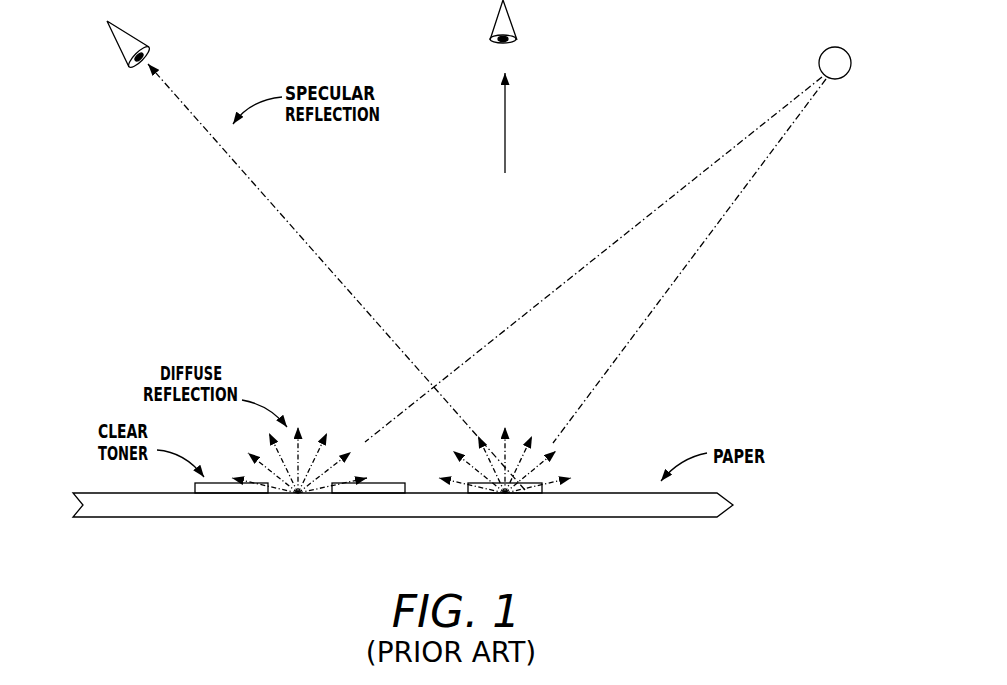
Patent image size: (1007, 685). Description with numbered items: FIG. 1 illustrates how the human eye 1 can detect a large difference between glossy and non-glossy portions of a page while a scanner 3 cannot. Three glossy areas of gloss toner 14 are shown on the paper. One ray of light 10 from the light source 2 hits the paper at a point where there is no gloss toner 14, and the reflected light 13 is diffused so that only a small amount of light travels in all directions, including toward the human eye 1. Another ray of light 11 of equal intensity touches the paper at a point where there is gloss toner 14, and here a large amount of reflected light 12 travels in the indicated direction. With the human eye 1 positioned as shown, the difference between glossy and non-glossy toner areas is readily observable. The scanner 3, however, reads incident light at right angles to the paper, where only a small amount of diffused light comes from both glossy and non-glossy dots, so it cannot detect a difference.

The human eye 1 is at (135, 37).
The light source 2 is at (822, 52).
The scanner 3 is at (513, 20).
The ray of light 10 is at (657, 210).
The ray of light 11 is at (707, 238).
The reflected light 12 is at (278, 207).
The reflected light 13 is at (314, 422).
The gloss toner 14 is at (219, 491).